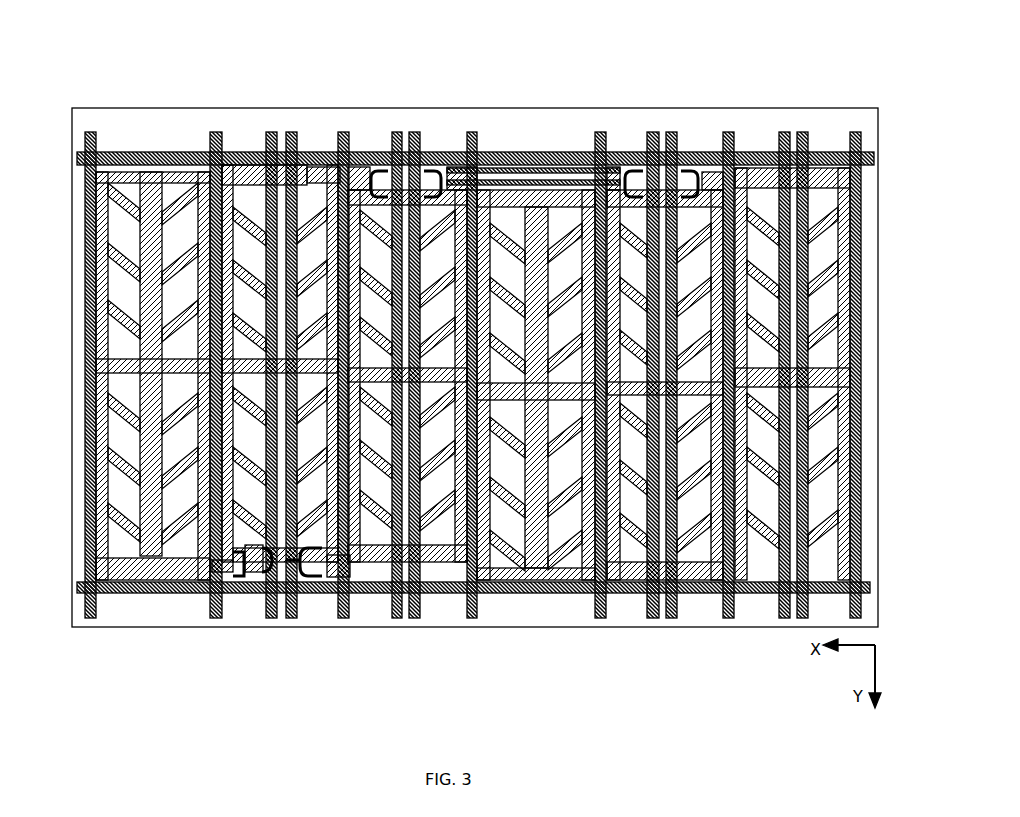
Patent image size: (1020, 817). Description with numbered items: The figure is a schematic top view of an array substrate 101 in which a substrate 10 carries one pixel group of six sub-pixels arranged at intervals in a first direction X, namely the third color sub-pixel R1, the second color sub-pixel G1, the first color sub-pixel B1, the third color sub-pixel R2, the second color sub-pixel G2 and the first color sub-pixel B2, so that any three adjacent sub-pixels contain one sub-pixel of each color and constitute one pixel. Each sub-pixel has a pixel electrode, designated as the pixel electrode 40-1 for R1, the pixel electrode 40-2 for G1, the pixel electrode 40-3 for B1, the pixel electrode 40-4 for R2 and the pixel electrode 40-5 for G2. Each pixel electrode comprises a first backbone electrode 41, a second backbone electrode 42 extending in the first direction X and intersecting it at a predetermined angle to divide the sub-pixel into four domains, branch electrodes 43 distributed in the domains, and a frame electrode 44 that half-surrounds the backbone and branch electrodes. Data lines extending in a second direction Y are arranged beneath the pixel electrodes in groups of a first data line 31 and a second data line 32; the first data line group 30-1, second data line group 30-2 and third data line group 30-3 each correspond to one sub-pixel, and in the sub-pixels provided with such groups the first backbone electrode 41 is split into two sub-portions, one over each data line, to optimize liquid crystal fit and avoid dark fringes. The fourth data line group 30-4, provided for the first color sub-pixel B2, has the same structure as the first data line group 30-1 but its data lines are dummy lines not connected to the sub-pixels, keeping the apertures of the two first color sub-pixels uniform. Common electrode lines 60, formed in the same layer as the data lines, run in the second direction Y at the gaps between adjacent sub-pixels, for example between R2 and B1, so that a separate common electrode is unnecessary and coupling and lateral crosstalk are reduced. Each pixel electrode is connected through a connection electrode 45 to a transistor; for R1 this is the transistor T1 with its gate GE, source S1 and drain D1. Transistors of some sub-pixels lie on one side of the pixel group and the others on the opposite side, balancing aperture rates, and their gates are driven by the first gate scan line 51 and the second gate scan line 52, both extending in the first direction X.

The array substrate 101 is at (205, 42).
The substrate 10 is at (853, 108).
The pixel electrode of the third color sub-pixel R1 40-1 is at (153, 311).
The pixel electrode of the second color sub-pixel G1 40-2 is at (323, 167).
The pixel electrode of the first color sub-pixel B1 40-3 is at (463, 215).
The pixel electrode of the third color sub-pixel R2 40-4 is at (517, 207).
The pixel electrode of the second color sub-pixel G2 40-5 is at (608, 210).
The first backbone electrode 41 is at (152, 183).
The second backbone electrode 42 is at (185, 357).
The branch electrodes 43 is at (122, 190).
The frame electrode 44 is at (204, 183).
The connection electrode 45 is at (358, 598).
The first gate scan line 51 is at (103, 152).
The second gate scan line 52 is at (100, 593).
The common electrode line 60 is at (473, 618).
The first data line group 30-1 is at (436, 80).
The second data line group 30-2 is at (310, 80).
The third data line group 30-3 is at (692, 78).
The fourth data line group 30-4 is at (823, 78).
The first data line 31 is at (268, 132).
The second data line 32 is at (293, 132).
The second color sub-pixel G1 is at (283, 310).
The second color sub-pixel G2 is at (651, 366).
The third color sub-pixel R1 is at (153, 355).
The third color sub-pixel R2 is at (533, 366).
The first color sub-pixel B1 is at (432, 364).
The first color sub-pixel B2 is at (750, 540).
The transistor T1 is at (260, 617).
The drain D1 is at (215, 598).
The gate GE is at (240, 598).
The source S1 is at (295, 603).